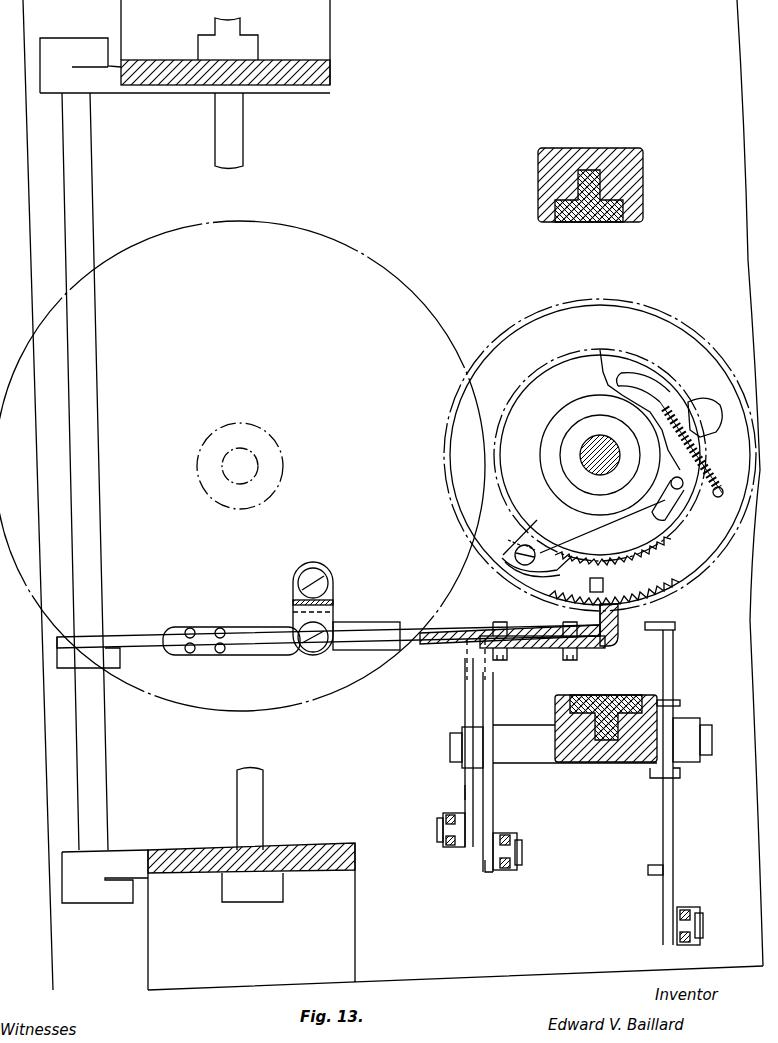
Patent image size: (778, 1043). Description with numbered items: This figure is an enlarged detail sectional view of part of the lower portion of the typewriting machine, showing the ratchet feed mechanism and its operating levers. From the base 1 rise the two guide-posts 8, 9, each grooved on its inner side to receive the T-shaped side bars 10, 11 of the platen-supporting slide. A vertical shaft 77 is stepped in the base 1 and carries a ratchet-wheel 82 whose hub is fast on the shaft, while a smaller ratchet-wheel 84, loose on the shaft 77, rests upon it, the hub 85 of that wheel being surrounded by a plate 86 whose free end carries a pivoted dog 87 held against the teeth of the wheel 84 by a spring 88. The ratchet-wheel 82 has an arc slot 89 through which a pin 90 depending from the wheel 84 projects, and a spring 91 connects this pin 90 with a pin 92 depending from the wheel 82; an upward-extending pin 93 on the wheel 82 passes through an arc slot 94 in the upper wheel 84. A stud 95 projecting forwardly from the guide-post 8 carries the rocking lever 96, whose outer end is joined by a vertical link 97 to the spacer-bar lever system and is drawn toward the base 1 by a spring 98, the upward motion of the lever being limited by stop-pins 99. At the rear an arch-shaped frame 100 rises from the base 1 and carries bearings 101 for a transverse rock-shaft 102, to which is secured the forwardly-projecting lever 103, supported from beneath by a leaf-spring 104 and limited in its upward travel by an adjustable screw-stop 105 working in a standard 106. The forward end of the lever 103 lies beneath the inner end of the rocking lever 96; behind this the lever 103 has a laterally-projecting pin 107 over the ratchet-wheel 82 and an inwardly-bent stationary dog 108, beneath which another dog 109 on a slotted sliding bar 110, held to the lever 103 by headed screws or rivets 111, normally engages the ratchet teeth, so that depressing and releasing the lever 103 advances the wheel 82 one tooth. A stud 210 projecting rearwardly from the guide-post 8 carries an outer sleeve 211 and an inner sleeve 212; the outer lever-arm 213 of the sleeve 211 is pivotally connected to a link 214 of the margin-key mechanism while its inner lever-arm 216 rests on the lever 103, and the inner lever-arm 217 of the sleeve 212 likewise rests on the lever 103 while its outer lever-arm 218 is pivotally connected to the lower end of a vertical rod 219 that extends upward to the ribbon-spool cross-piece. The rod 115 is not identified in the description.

The base 1 is at (393, 495).
The guide-post 8 is at (578, 763).
The guide-post 9 is at (620, 148).
The side bar 10 is at (620, 690).
The side bar 11 is at (610, 224).
The vertical shaft 77 is at (575, 448).
The ratchet-wheel 82 is at (614, 579).
The smaller ratchet-wheel 84 is at (605, 532).
The hub 85 is at (598, 445).
The plate 86 is at (591, 452).
The pivoted dog 87 is at (540, 552).
The spring 88 is at (545, 575).
The arc slot 89 is at (640, 385).
The pin 90 is at (672, 405).
The spring 91 is at (705, 417).
The pin 92 is at (722, 485).
The upward-extending pin 93 is at (680, 470).
The arc slot 94 is at (648, 514).
The stud 95 is at (712, 742).
The rocking lever 96 is at (675, 838).
The vertical link 97 is at (690, 908).
The spring 98 is at (652, 877).
The stop-pins 99 is at (680, 700).
The arch-shaped frame 100 is at (303, 87).
The bearings 101 is at (94, 470).
The transverse rock-shaft 102 is at (87, 471).
The lever 103 is at (248, 653).
The leaf-spring 104 is at (258, 630).
The adjustable screw-stop 105 is at (315, 651).
The standard 106 is at (328, 588).
The laterally-projecting pin 107 is at (603, 585).
The stationary dog 108 is at (590, 603).
The dog 109 is at (620, 612).
The slotted sliding bar 110 is at (540, 650).
The headed screws or rivets 111 is at (574, 662).
The rod 115 is at (228, 172).
The stud 210 is at (448, 748).
The outer sleeve 211 is at (460, 740).
The inner sleeve 212 is at (575, 744).
The outer lever-arm 213 is at (463, 792).
The link 214 is at (448, 849).
The inner lever-arm 216 is at (463, 690).
The inner lever-arm 217 is at (493, 712).
The outer lever-arm 218 is at (490, 805).
The vertical rod 219 is at (512, 872).